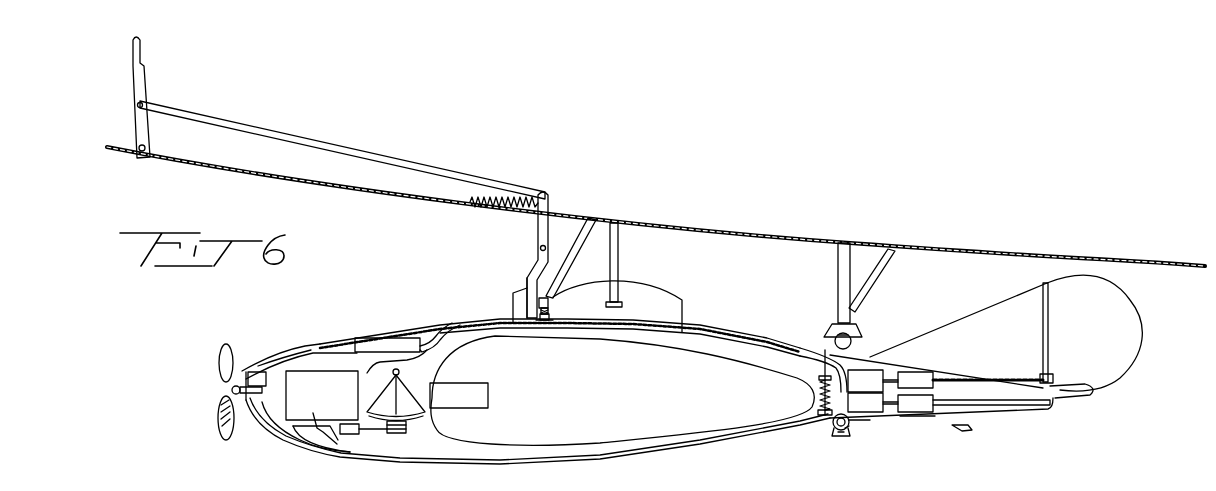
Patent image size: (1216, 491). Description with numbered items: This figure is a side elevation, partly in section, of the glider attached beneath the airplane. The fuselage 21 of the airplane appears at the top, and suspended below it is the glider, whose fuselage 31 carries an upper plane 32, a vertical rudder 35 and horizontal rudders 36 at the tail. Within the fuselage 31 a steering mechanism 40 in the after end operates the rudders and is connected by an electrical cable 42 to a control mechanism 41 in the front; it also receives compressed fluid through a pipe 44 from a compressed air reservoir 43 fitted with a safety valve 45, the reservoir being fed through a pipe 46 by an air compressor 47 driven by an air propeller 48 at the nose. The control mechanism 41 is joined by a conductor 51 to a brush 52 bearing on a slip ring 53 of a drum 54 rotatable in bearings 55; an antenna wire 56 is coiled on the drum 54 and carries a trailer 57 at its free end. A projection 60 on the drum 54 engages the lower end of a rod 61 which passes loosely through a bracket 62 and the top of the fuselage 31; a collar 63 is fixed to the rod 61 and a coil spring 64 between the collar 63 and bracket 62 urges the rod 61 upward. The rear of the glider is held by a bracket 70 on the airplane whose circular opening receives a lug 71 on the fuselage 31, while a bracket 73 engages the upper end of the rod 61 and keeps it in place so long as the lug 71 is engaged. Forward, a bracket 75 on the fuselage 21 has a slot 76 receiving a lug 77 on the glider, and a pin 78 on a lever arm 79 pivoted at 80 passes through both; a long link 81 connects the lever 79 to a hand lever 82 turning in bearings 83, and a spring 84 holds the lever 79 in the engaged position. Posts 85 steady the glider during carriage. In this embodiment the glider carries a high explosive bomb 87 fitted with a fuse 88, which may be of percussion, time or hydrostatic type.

The fuselage 21 is at (980, 249).
The fuselage 31 is at (720, 338).
The upper plane 32 is at (645, 294).
The vertical rudder 35 is at (1130, 360).
The horizontal rudder 36 is at (1075, 398).
The steering mechanism 40 is at (896, 372).
The control mechanism 41 is at (357, 390).
The electrical cable 42 is at (385, 400).
The compressed air reservoir 43 is at (380, 340).
The pipe 44 is at (432, 330).
The safety valve 45 is at (413, 332).
The pipe 46 is at (312, 347).
The air compressor 47 is at (249, 373).
The air propeller 48 is at (222, 388).
The conductor 51 is at (412, 442).
The brush 52 is at (840, 434).
The slip ring 53 is at (850, 422).
The drum 54 is at (925, 418).
The bearings 55 is at (845, 431).
The antenna wire 56 is at (923, 414).
The trailer 57 is at (968, 432).
The projection 60 is at (812, 433).
The rod 61 is at (822, 350).
The bracket 62 is at (816, 413).
The collar 63 is at (818, 379).
The coil spring 64 is at (818, 396).
The bracket 70 is at (843, 287).
The lug 71 is at (852, 338).
The bracket 73 is at (830, 331).
The bracket 75 is at (549, 265).
The slot 76 is at (550, 304).
The lug 77 is at (549, 318).
The pin 78 is at (549, 312).
The lever arm 79 is at (526, 278).
The pivot 80 is at (540, 249).
The link 81 is at (301, 126).
The hand lever 82 is at (143, 78).
The bearings 83 is at (141, 152).
The spring 84 is at (500, 208).
The post 85 is at (619, 251).
The high explosive bomb 87 is at (556, 447).
The fuse 88 is at (460, 383).